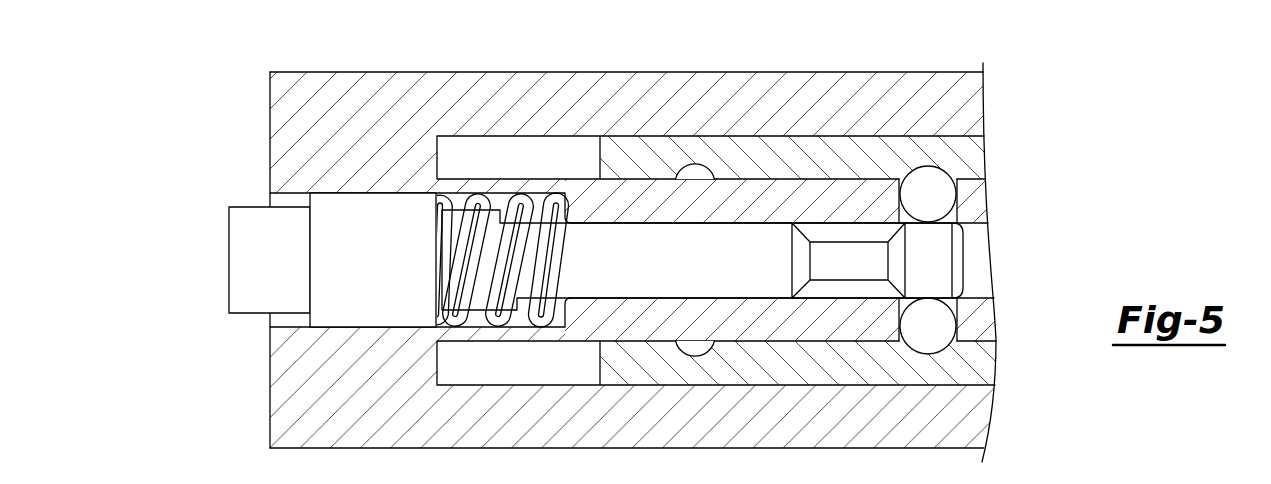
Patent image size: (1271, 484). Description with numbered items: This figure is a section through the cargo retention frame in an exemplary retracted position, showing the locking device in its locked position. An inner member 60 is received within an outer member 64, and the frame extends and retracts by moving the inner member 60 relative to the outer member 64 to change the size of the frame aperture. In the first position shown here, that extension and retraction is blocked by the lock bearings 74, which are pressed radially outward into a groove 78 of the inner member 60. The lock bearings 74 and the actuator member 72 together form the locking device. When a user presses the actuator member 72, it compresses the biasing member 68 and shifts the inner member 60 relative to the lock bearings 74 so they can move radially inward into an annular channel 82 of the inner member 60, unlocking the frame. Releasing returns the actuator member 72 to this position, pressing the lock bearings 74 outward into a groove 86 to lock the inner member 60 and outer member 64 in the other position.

The inner member 60 is at (930, 136).
The outer member 64 is at (897, 73).
The biasing member 68 is at (563, 252).
The actuator member 72 is at (229, 261).
The lock bearing 74 is at (948, 215).
The groove 78 is at (937, 173).
The annular channel 82 is at (848, 241).
The groove 86 is at (695, 166).